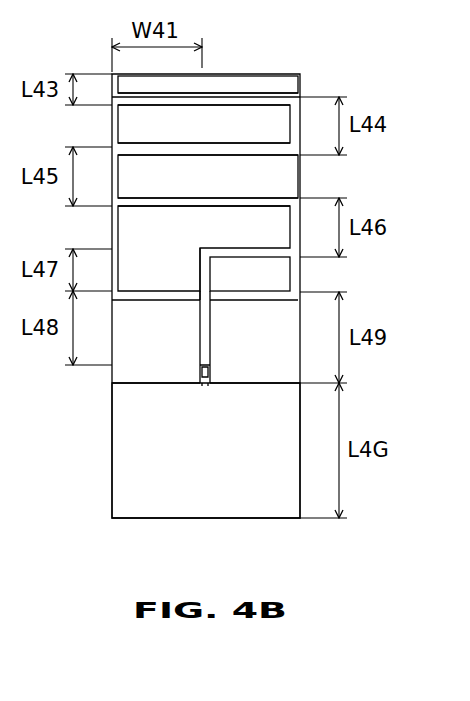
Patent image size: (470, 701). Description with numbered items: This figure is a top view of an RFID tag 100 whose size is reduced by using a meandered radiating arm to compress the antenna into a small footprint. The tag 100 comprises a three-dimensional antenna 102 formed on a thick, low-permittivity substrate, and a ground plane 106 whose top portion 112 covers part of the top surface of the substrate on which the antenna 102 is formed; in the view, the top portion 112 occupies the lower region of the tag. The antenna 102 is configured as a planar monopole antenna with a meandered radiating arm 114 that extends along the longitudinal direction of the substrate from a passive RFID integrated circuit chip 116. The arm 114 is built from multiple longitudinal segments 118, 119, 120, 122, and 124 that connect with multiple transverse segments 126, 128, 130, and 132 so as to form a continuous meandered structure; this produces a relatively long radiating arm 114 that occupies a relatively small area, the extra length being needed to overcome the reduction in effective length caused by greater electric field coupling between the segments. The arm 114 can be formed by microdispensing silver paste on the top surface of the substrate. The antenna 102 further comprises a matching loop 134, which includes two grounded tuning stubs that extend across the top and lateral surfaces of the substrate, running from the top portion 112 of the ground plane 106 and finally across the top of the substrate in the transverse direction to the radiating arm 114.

The RFID tag 100 is at (421, 141).
The three-dimensional antenna 102 is at (307, 88).
The ground plane 106 is at (90, 502).
The top portion 112 is at (187, 462).
The meandered radiating arm 114 is at (180, 280).
The passive RFID integrated circuit chip 116 is at (213, 367).
The longitudinal segment 118 is at (206, 332).
The longitudinal segment 119 is at (292, 224).
The longitudinal segment 120 is at (120, 173).
The longitudinal segment 122 is at (290, 118).
The longitudinal segment 124 is at (118, 82).
The transverse segment 126 is at (232, 256).
The transverse segment 128 is at (121, 205).
The transverse segment 130 is at (212, 152).
The transverse segment 132 is at (119, 100).
The matching loop 134 is at (90, 382).